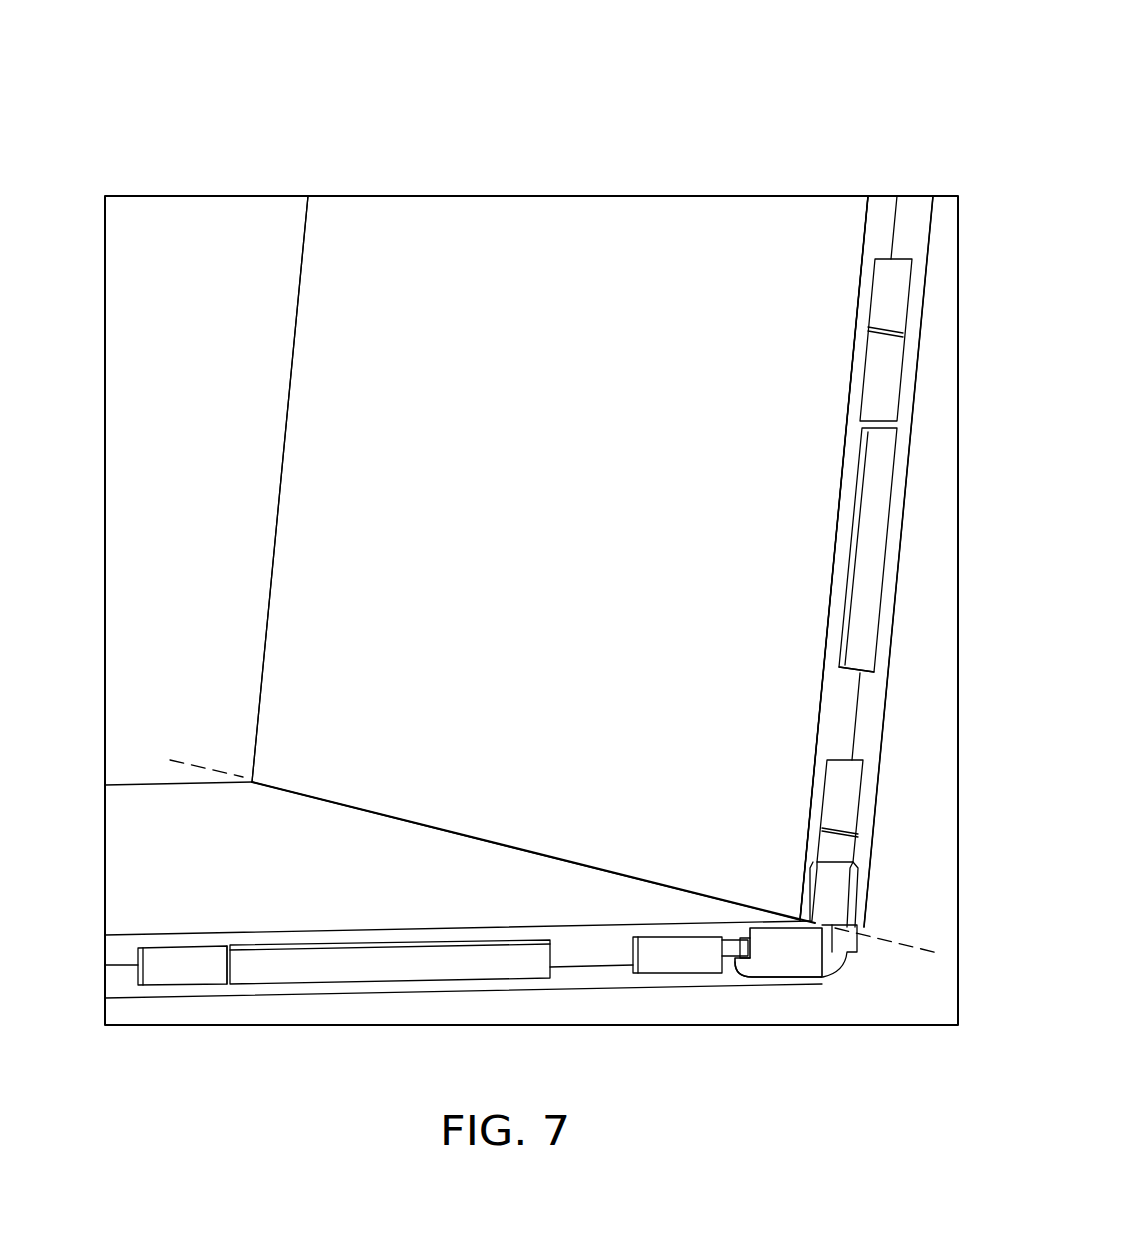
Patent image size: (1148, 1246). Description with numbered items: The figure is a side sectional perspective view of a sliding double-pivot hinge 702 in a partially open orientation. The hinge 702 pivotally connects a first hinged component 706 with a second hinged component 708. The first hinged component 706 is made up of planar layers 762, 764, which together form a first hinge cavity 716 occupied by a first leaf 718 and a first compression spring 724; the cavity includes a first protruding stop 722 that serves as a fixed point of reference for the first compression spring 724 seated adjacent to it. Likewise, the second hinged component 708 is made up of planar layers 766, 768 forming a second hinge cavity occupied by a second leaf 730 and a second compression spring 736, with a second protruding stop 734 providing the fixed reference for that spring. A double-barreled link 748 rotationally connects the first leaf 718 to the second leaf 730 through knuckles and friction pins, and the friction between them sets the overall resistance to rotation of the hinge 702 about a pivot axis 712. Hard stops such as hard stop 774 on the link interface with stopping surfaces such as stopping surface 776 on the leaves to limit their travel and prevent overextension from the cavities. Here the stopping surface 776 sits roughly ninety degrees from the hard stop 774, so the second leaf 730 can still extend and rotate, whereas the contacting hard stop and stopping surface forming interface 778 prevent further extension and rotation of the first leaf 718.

The sliding double-pivot hinge 702 is at (683, 745).
The first hinged component 706 is at (577, 489).
The second hinged component 708 is at (301, 845).
The pivot axis 712 is at (940, 951).
The first hinge cavity 716 is at (895, 290).
The first leaf 718 is at (882, 388).
The first protruding stop 722 is at (847, 713).
The first compression spring 724 is at (872, 548).
The second leaf 730 is at (190, 968).
The second protruding stop 734 is at (587, 952).
The second compression spring 736 is at (405, 962).
The double-barreled link 748 is at (810, 962).
The planar layer 762 is at (920, 183).
The planar layer 764 is at (885, 183).
The planar layer 766 is at (90, 988).
The planar layer 768 is at (90, 953).
The hard stop 774 is at (747, 937).
The stopping surface 776 is at (748, 945).
The interface 778 is at (815, 962).